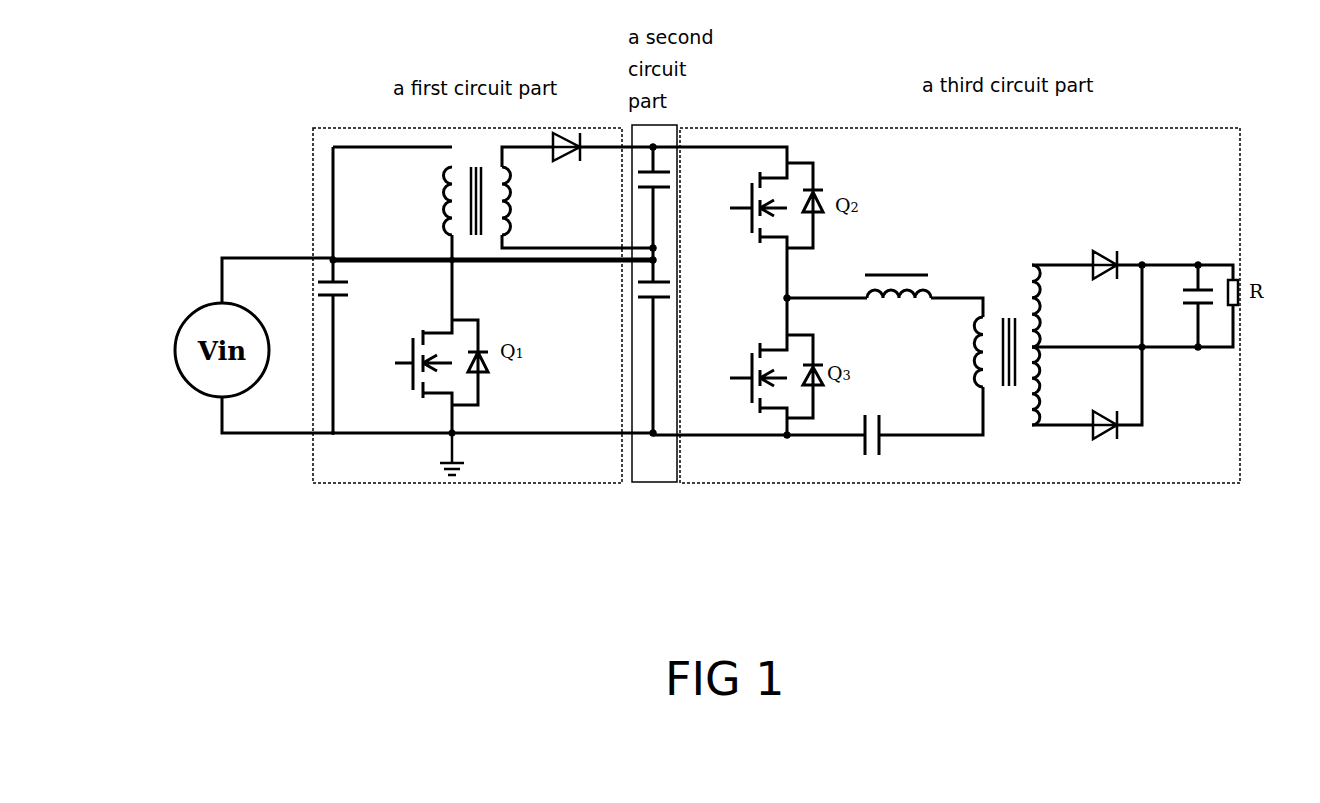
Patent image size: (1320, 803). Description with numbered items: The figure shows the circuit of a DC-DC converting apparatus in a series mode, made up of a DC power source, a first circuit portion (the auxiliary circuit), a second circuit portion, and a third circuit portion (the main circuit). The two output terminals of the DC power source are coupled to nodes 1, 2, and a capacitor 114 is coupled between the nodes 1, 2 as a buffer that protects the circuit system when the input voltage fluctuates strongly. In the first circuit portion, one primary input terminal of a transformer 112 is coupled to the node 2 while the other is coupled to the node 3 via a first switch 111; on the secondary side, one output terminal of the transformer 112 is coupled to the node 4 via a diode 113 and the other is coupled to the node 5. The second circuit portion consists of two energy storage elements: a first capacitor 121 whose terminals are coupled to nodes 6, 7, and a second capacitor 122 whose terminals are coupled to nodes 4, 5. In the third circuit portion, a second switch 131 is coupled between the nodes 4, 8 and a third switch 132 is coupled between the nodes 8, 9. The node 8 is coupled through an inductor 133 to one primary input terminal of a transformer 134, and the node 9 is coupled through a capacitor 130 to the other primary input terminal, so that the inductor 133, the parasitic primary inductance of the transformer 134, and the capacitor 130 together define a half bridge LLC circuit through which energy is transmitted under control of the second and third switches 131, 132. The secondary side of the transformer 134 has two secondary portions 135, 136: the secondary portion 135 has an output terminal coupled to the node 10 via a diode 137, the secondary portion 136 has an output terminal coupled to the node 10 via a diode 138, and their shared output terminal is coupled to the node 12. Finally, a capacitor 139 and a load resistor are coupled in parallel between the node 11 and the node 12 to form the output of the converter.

The node 1 is at (345, 418).
The node 2 is at (345, 245).
The node 3 is at (461, 423).
The node 4 is at (659, 138).
The node 5 is at (660, 236).
The node 6 is at (660, 270).
The node 7 is at (654, 449).
The node 8 is at (795, 287).
The node 9 is at (784, 449).
The node 10 is at (1145, 251).
The node 11 is at (1193, 251).
The node 12 is at (1195, 360).
The switch Q1 111 is at (485, 362).
The transformer 112 is at (465, 201).
The diode 113 is at (568, 161).
The capacitor 114 is at (347, 305).
The capacitor C1 121 is at (678, 285).
The capacitor C2 122 is at (678, 175).
The capacitor 130 is at (870, 445).
The switch Q2 131 is at (821, 205).
The switch Q3 132 is at (821, 376).
The inductor 133 is at (903, 273).
The transformer 134 is at (1011, 345).
The secondary portion 135 is at (1053, 306).
The secondary portion 136 is at (1053, 386).
The diode 137 is at (1103, 250).
The diode 138 is at (1108, 442).
The capacitor 139 is at (1184, 310).